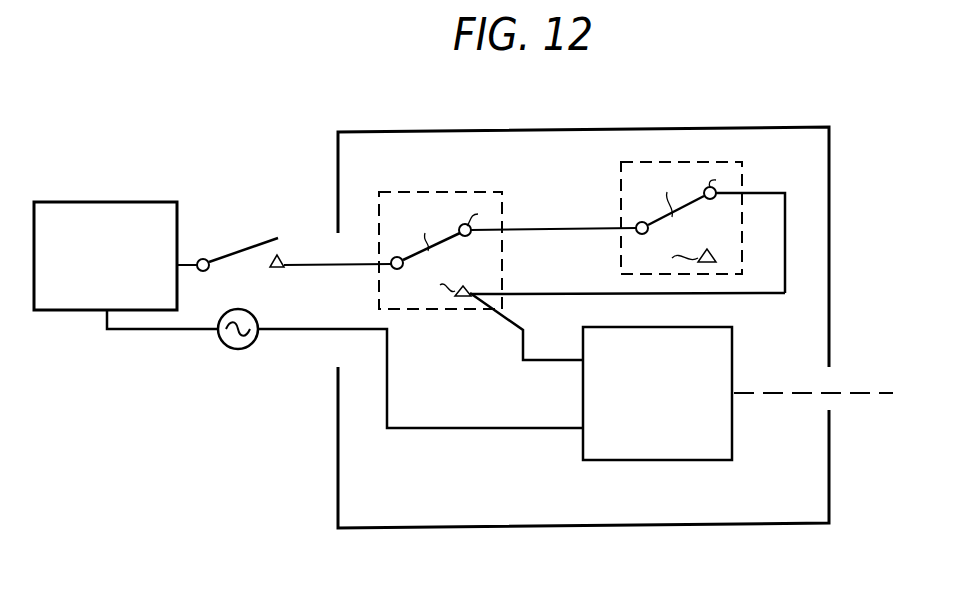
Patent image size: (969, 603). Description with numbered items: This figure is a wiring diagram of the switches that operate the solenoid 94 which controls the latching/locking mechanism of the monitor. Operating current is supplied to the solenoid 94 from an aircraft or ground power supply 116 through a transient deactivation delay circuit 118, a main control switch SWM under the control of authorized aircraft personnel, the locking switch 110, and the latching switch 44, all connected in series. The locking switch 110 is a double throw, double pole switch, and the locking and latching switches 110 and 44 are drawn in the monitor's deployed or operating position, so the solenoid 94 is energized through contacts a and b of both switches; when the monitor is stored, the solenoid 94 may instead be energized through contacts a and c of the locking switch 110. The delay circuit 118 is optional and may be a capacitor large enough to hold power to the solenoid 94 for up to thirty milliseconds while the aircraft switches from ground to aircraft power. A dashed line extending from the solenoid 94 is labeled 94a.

The transient deactivation delay circuit 118 is at (145, 202).
The main control switch SWM is at (284, 242).
The power supply 116 is at (249, 348).
The locking switch 110 is at (447, 190).
The latching switch 44 is at (703, 212).
The solenoid 94 is at (735, 445).
The solenoid plunger 94a is at (772, 392).